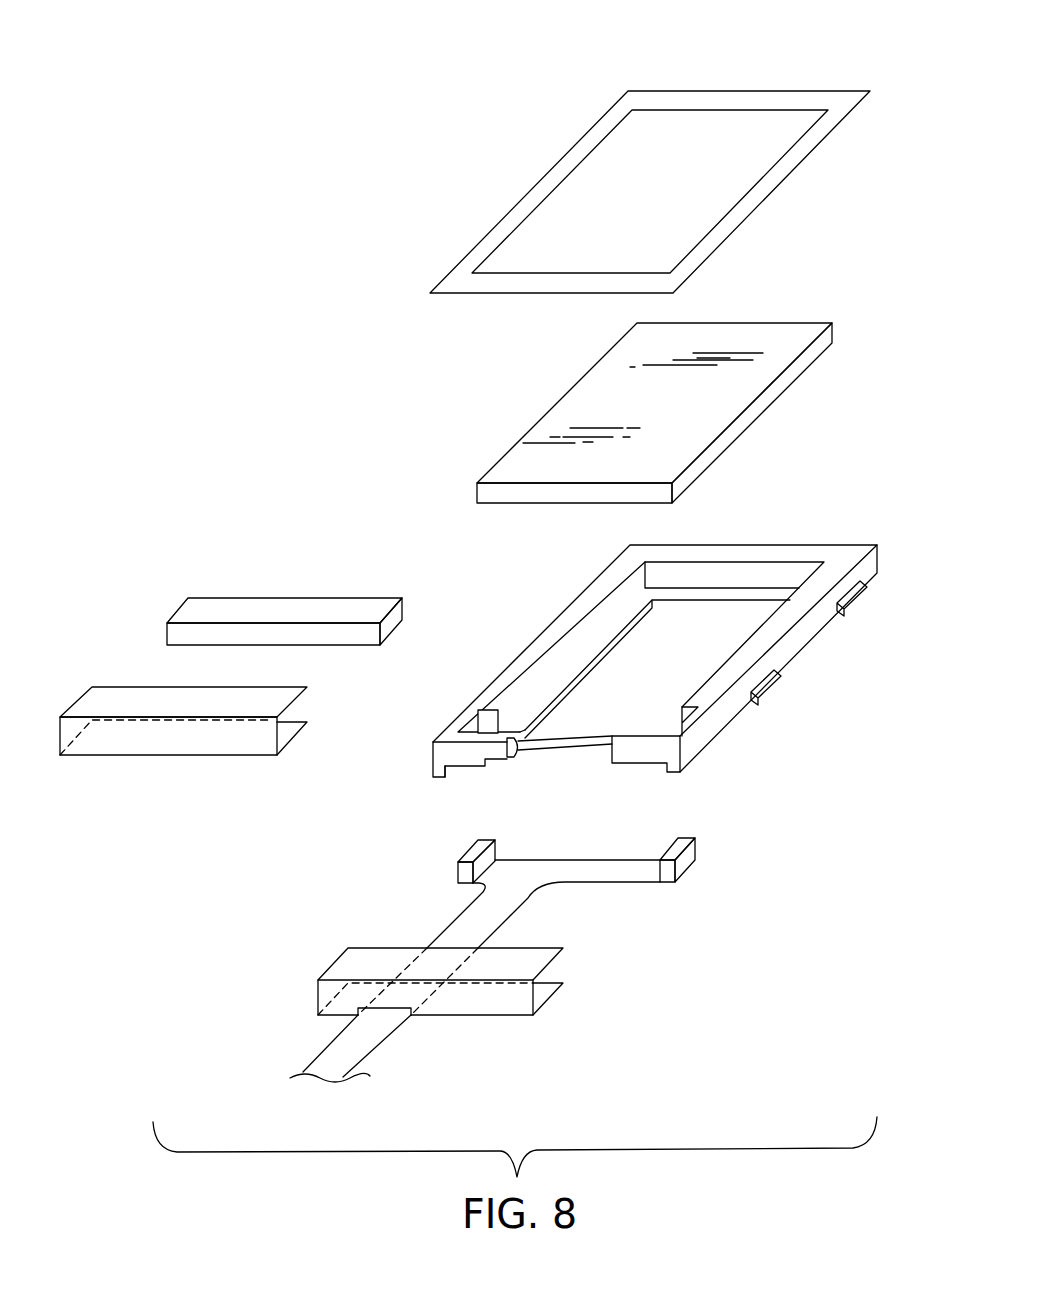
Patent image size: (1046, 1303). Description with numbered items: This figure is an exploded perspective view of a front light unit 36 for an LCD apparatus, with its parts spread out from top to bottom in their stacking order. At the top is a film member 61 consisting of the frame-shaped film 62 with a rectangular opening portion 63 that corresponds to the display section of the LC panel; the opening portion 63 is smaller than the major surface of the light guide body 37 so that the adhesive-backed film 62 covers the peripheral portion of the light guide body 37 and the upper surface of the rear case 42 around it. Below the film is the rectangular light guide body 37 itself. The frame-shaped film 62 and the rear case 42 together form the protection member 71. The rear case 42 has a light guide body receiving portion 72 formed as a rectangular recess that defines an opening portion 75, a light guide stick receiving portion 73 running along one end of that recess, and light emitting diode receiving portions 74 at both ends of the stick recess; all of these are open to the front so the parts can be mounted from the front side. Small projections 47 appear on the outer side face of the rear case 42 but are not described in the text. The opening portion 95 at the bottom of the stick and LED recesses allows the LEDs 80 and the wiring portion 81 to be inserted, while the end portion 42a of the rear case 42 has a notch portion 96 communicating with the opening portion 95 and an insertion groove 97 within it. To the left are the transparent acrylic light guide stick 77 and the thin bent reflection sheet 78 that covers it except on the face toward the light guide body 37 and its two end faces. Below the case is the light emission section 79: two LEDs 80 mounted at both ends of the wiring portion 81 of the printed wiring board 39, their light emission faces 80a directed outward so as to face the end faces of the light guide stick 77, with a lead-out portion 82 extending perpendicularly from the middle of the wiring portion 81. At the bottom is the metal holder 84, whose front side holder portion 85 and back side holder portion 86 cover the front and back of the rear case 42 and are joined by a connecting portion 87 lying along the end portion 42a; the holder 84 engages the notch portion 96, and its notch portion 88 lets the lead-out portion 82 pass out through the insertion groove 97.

The display unit 36 is at (376, 396).
The light guide body 37 is at (735, 399).
The printed wiring board 39 is at (326, 1049).
The rear case 42 is at (666, 665).
The end portion 42a is at (650, 757).
The engaging clip 47 is at (863, 598).
The protective panel 61 is at (654, 169).
The frame-shaped film 62 is at (772, 98).
The opening portion 63 is at (699, 110).
The protection member 71 is at (666, 650).
The light guide body receiving portion 72 is at (762, 588).
The light guide stick receiving portion 73 is at (558, 738).
The light emitting diode receiving portions 74 is at (475, 725).
The opening portion 75 is at (707, 600).
The light guide stick 77 is at (242, 598).
The reflection sheet 78 is at (122, 685).
The light emission section 79 is at (515, 957).
The light emitting diodes 80 is at (457, 870).
The light emission faces 80a is at (488, 855).
The wiring portion 81 is at (640, 877).
The lead-out portion 82 is at (352, 1062).
The holder 84 is at (458, 1007).
The front side holder portion 85 is at (543, 962).
The back side holder portion 86 is at (543, 996).
The connecting portion 87 is at (482, 1005).
The notch portion 88 is at (408, 1017).
The opening portion 95 is at (567, 752).
The notch portion 96 is at (460, 767).
The insertion groove 97 is at (503, 760).